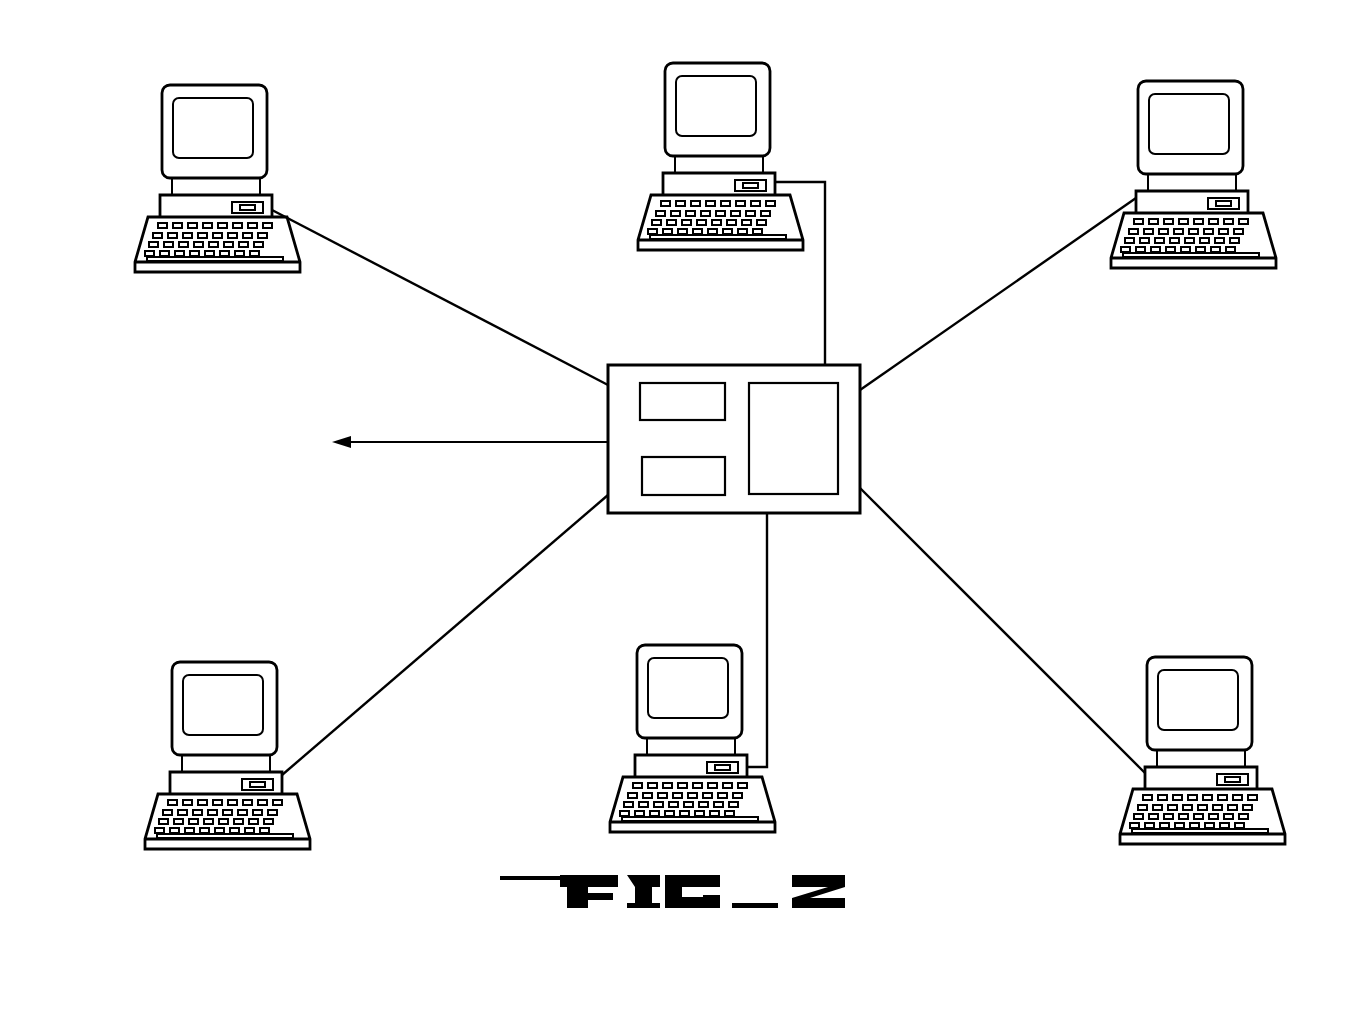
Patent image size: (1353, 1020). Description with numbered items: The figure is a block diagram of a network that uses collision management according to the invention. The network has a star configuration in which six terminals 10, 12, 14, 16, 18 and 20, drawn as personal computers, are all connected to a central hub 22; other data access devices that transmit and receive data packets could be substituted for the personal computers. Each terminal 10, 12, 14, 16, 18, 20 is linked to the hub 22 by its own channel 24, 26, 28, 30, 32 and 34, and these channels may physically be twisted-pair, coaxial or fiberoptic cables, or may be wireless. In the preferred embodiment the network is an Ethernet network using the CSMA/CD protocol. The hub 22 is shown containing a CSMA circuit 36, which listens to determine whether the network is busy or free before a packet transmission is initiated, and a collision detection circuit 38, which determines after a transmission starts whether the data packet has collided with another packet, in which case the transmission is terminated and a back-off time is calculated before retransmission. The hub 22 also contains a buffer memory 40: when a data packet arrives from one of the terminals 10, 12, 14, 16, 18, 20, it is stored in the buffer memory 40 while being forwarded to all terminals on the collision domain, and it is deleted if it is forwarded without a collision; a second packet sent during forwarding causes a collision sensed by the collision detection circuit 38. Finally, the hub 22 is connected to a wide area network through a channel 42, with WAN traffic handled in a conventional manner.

The terminal 10 is at (248, 185).
The terminal 12 is at (757, 158).
The terminal 14 is at (1225, 178).
The terminal 16 is at (1232, 755).
The terminal 18 is at (657, 743).
The terminal 20 is at (260, 758).
The hub 22 is at (622, 383).
The channel 24 is at (422, 290).
The channel 26 is at (825, 288).
The channel 28 is at (958, 312).
The channel 30 is at (953, 575).
The channel 32 is at (767, 630).
The channel 34 is at (450, 630).
The CSMA circuit 36 is at (698, 383).
The collision detection circuit 38 is at (707, 495).
The buffer memory 40 is at (825, 422).
The channel 42 is at (432, 442).